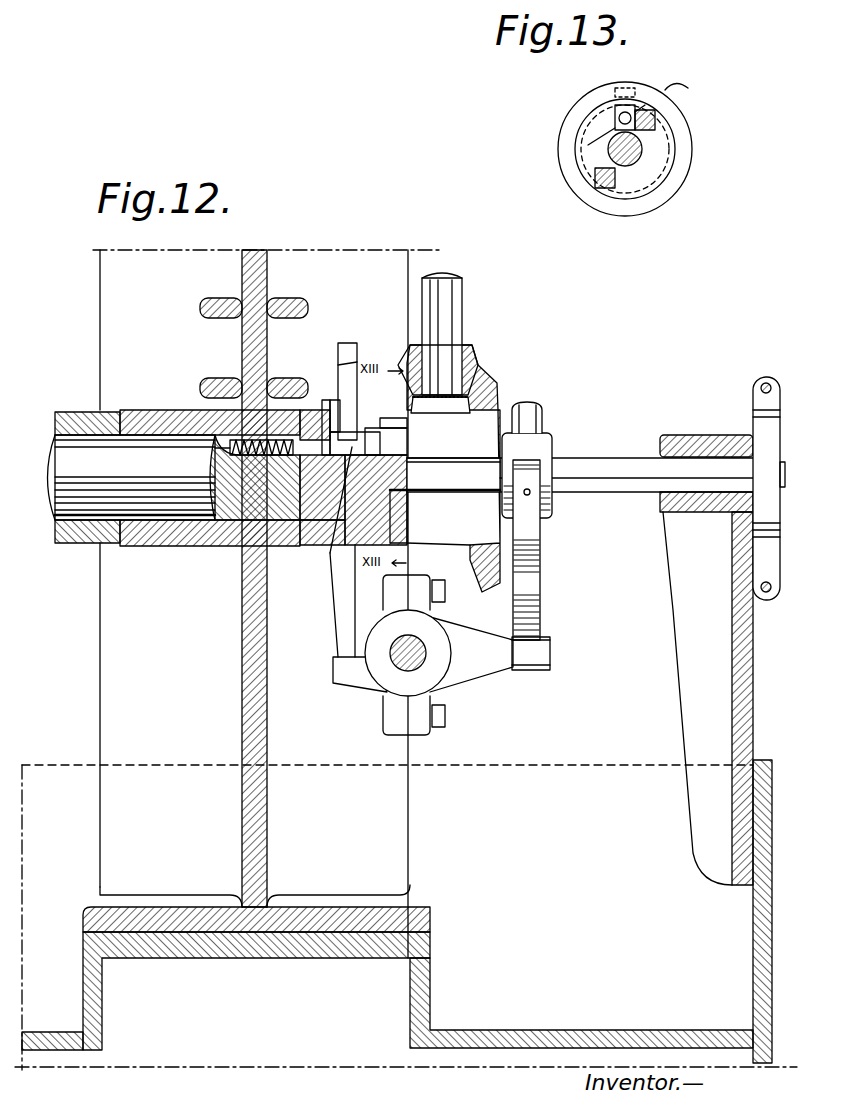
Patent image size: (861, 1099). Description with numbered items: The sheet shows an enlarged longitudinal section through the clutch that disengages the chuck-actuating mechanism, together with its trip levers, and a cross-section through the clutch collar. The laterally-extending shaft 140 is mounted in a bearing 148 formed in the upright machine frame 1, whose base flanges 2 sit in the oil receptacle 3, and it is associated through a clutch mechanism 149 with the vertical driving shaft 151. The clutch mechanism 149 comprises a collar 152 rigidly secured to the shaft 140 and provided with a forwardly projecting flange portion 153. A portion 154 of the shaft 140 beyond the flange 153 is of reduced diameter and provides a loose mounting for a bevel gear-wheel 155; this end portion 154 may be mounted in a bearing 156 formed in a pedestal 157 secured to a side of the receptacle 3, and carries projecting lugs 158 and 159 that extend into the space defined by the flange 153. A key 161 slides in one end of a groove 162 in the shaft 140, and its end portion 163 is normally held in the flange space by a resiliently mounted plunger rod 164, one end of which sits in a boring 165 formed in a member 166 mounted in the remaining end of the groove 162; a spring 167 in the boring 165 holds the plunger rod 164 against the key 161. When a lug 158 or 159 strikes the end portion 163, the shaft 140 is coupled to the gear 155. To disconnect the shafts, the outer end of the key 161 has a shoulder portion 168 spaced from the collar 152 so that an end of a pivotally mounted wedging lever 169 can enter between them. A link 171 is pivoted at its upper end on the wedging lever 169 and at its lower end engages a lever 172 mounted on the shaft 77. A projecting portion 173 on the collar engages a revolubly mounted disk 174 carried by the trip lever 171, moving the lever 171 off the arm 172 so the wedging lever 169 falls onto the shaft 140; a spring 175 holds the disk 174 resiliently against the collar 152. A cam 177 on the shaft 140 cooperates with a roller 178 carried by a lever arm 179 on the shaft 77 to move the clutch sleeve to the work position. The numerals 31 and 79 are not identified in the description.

In FIG. 12, the frame 1 is at (405, 258).
In FIG. 12, the base flanges 2 is at (400, 905).
In FIG. 12, the receptacle 3 is at (762, 760).
In FIG. 12, the link bar 31 is at (755, 418).
In FIG. 12, the shaft 77 is at (415, 658).
In FIG. 12, the bracket 79 is at (420, 722).
In FIG. 13, the laterally-extending shaft 140 is at (660, 150).
In FIG. 12, the laterally-extending shaft 140 is at (72, 480).
In FIG. 12, the bearing 148 is at (175, 540).
In FIG. 12, the clutch mechanism 149 is at (407, 548).
In FIG. 12, the vertical driving shaft 151 is at (450, 300).
In FIG. 13, the collar 152 is at (575, 185).
In FIG. 12, the collar 152 is at (340, 545).
In FIG. 13, the flange portion 153 is at (648, 205).
In FIG. 12, the flange portion 153 is at (438, 379).
In FIG. 13, the reduced-diameter portion 154 is at (632, 162).
In FIG. 12, the reduced-diameter portion 154 is at (578, 466).
In FIG. 12, the bevel gear-wheel 155 is at (497, 373).
In FIG. 12, the bearing 156 is at (712, 418).
In FIG. 12, the pedestal 157 is at (753, 650).
In FIG. 13, the projecting lug 158 is at (603, 185).
In FIG. 13, the projecting lug 159 is at (658, 118).
In FIG. 12, the projecting lug 159 is at (453, 469).
In FIG. 13, the key 161 is at (600, 138).
In FIG. 12, the key 161 is at (350, 470).
In FIG. 12, the groove 162 is at (326, 405).
In FIG. 13, the end portion 163 is at (618, 115).
In FIG. 12, the end portion 163 is at (440, 445).
In FIG. 13, the plunger rod 164 is at (635, 110).
In FIG. 12, the plunger rod 164 is at (300, 525).
In FIG. 12, the boring 165 is at (215, 420).
In FIG. 12, the member 166 is at (215, 475).
In FIG. 12, the spring 167 is at (232, 447).
In FIG. 13, the shoulder portion 168 is at (625, 90).
In FIG. 12, the shoulder portion 168 is at (335, 405).
In FIG. 12, the wedging lever 169 is at (348, 343).
In FIG. 12, the link 171 is at (340, 600).
In FIG. 12, the lever 172 is at (345, 672).
In FIG. 13, the projecting portion 173 is at (680, 85).
In FIG. 12, the disk 174 is at (420, 482).
In FIG. 12, the spring 175 is at (370, 440).
In FIG. 12, the cam 177 is at (525, 568).
In FIG. 12, the roller 178 is at (530, 668).
In FIG. 12, the lever arm 179 is at (482, 660).